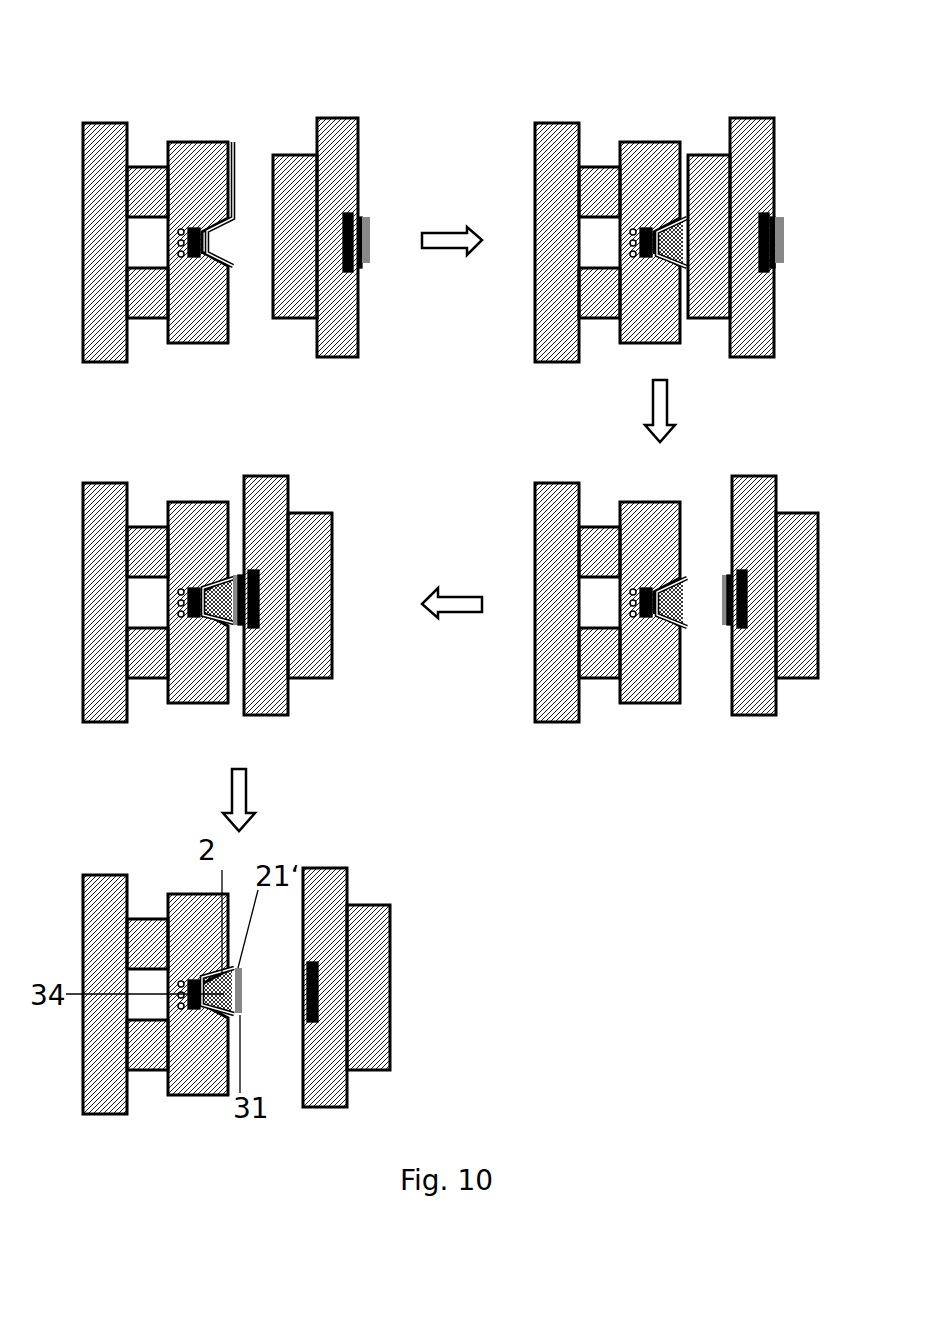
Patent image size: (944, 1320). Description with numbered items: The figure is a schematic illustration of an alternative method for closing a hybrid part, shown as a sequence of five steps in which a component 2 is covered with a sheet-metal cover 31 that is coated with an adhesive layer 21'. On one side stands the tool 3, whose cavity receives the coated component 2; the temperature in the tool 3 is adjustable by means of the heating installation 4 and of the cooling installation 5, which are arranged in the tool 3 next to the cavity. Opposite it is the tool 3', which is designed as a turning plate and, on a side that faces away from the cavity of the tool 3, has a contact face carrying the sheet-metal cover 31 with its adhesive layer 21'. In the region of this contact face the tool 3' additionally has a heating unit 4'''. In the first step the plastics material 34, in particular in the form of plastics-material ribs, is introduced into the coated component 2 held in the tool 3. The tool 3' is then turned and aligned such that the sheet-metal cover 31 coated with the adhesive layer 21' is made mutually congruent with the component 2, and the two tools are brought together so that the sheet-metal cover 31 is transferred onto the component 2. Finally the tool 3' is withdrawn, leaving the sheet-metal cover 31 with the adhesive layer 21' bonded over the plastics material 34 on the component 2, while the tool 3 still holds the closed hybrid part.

The component 2 is at (233, 142).
The tool 3 is at (198, 191).
The tool 3' is at (315, 187).
The heating installation 4 is at (122, 248).
The heating unit 4''' is at (383, 190).
The cooling installation 5 is at (178, 231).
The sheet-metal cover 31 is at (361, 262).
The adhesive layer 21' is at (418, 292).
The plastics material 34 is at (680, 238).